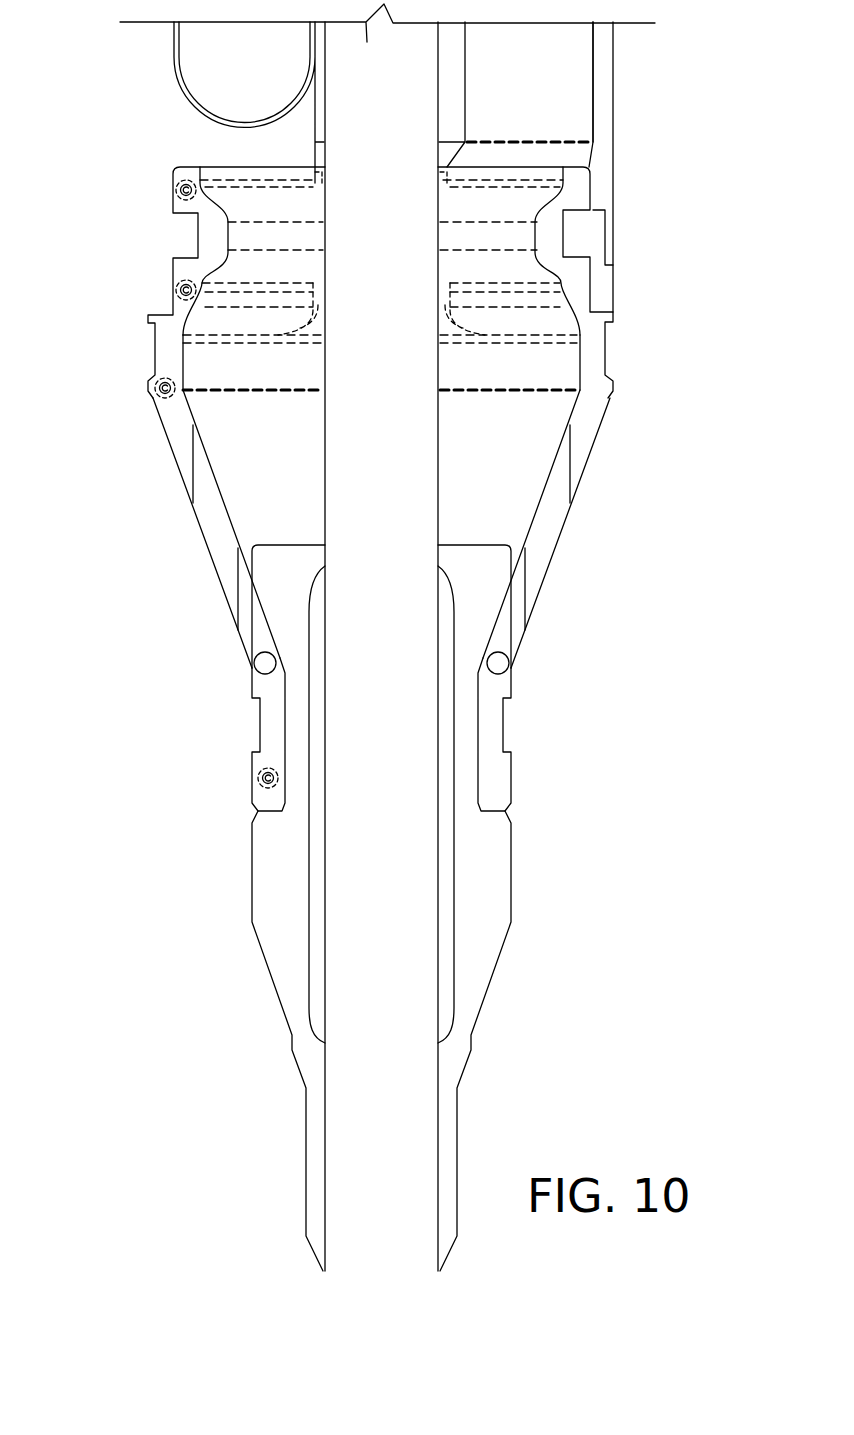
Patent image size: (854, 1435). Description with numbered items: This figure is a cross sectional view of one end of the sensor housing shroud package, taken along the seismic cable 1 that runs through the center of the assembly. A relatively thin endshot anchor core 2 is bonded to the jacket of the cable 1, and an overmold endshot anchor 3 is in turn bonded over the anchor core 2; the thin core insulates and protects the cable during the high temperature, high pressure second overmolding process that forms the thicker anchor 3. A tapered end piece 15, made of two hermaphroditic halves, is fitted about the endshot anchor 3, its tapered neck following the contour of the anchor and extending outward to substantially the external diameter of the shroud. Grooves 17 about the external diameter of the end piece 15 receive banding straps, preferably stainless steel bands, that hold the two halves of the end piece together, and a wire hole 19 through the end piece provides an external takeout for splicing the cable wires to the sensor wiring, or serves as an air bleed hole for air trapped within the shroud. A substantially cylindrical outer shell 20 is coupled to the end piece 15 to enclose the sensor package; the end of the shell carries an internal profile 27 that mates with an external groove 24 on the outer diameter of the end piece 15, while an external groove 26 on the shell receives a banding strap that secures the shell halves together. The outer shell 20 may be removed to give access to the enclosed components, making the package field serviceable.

The seismic cable 1 is at (398, 567).
The endshot anchor core 2 is at (317, 909).
The overmold endshot anchor 3 is at (258, 871).
The end piece 15 is at (593, 420).
The groove 17 is at (153, 340).
The wire hole 19 is at (210, 535).
The outer shell 20 is at (610, 175).
The external groove 24 is at (198, 248).
The external groove 26 is at (605, 242).
The internal profile 27 is at (578, 240).